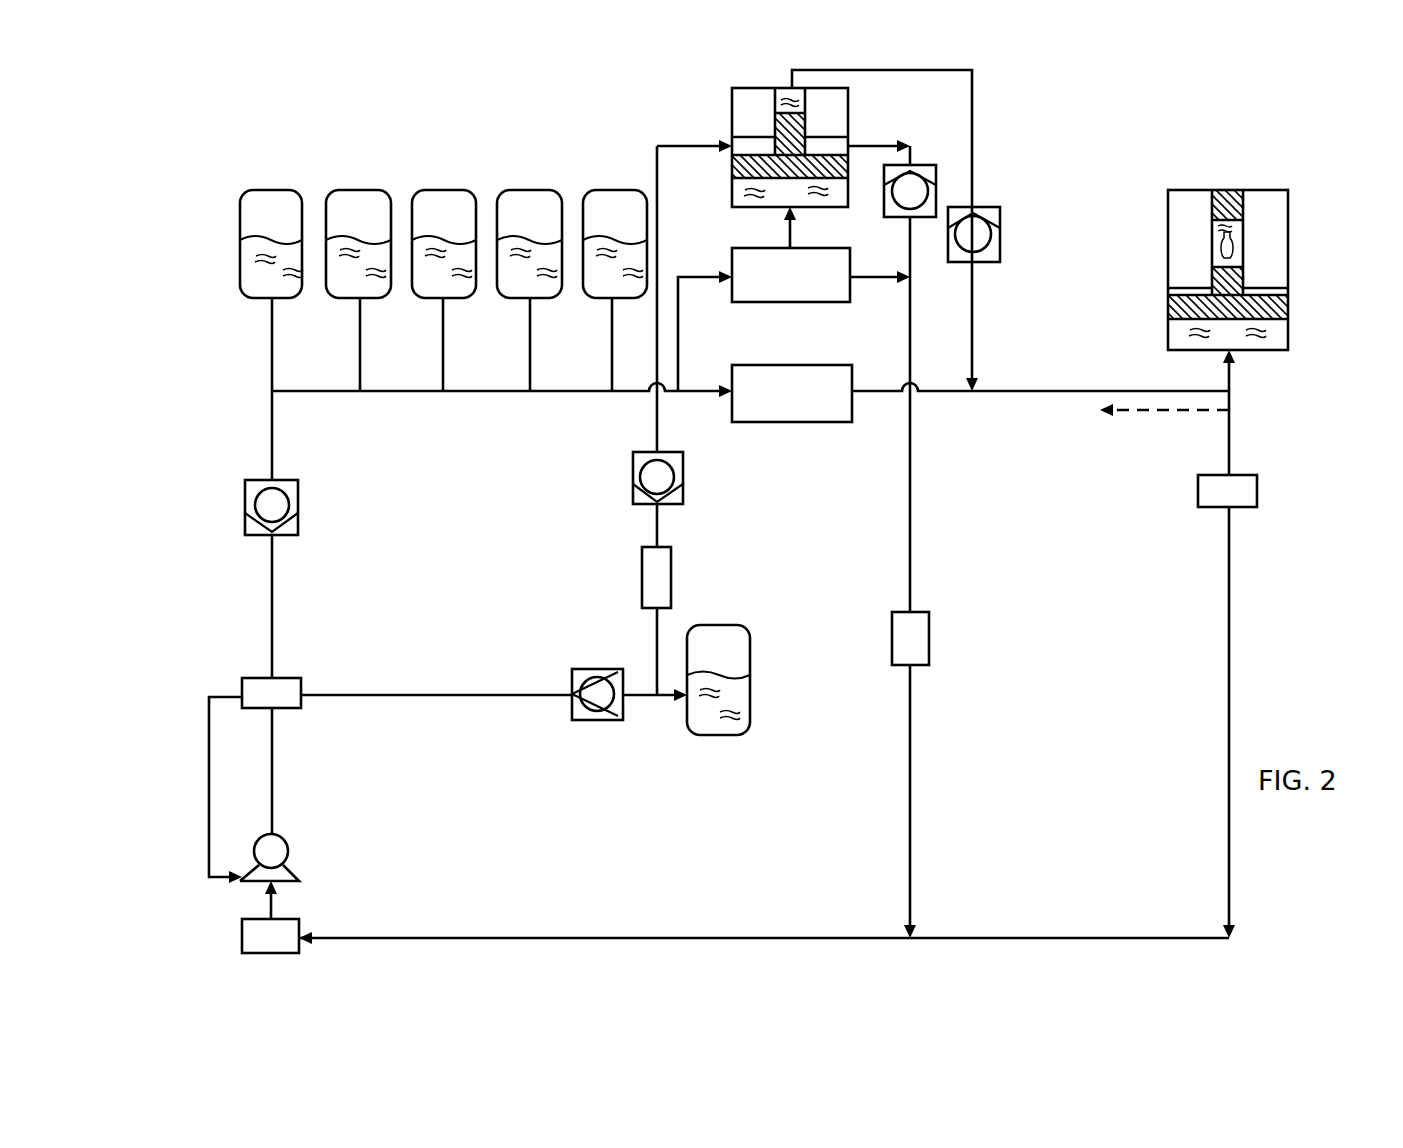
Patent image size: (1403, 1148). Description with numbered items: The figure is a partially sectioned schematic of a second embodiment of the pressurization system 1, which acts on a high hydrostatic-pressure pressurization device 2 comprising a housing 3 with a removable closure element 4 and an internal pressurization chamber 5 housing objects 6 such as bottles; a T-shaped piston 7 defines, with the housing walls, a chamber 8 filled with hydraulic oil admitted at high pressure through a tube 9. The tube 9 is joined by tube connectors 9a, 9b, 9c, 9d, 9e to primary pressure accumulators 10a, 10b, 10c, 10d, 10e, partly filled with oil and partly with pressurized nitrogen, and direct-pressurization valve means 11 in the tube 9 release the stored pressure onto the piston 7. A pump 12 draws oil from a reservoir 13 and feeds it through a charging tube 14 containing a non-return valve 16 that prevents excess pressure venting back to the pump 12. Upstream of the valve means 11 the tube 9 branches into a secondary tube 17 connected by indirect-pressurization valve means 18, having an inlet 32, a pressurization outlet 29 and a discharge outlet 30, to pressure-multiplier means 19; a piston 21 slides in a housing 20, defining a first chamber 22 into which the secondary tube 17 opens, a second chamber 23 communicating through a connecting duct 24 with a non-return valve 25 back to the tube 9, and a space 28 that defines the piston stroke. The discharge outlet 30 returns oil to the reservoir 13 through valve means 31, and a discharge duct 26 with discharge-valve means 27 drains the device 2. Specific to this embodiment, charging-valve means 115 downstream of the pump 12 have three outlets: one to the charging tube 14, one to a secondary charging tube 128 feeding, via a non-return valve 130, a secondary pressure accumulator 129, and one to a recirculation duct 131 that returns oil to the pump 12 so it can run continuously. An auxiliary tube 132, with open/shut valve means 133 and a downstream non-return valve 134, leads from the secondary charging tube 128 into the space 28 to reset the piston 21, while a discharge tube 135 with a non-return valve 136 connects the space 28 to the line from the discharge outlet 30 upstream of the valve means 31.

The pressurization system 1 is at (398, 106).
The pressurization device 2 is at (1300, 217).
The housing 3 is at (1288, 196).
The removable closure element 4 is at (1223, 190).
The pressurization chamber 5 is at (1210, 243).
The objects 6 is at (1243, 250).
The piston 7 is at (1288, 305).
The chamber 8 is at (1180, 340).
The tube 9 is at (1025, 391).
The tube connector 9a is at (272, 345).
The tube connector 9b is at (360, 345).
The tube connector 9c is at (443, 345).
The tube connector 9d is at (530, 345).
The tube connector 9e is at (612, 345).
The primary pressure accumulator 10a is at (258, 190).
The primary pressure accumulator 10b is at (340, 190).
The primary pressure accumulator 10c is at (424, 190).
The primary pressure accumulator 10d is at (509, 190).
The primary pressure accumulator 10e is at (596, 190).
The direct-pressurization valve means 11 is at (773, 422).
The pump 12 is at (297, 862).
The reservoir 13 is at (299, 931).
The charging tube 14 is at (272, 626).
The non-return valve 16 is at (298, 514).
The secondary tube 17 is at (706, 280).
The indirect-pressurization valve means 18 is at (850, 288).
The pressure-multiplier means 19 is at (722, 105).
The housing 20 is at (848, 108).
The piston 21 is at (848, 150).
The first chamber 22 is at (848, 188).
The second chamber 23 is at (788, 93).
The connecting duct 24 is at (972, 70).
The non-return valve 25 is at (1000, 222).
The discharge duct 26 is at (1232, 450).
The discharge-valve means 27 is at (1198, 490).
The space 28 is at (736, 147).
The pressurization outlet 29 is at (790, 237).
The discharge outlet 30 is at (880, 273).
The valve means 31 is at (930, 635).
The inlet 32 is at (728, 283).
The charging-valve means 115 is at (301, 693).
The secondary charging tube 128 is at (517, 697).
The secondary pressure accumulator 129 is at (750, 653).
The non-return valve 130 is at (605, 722).
The recirculation duct 131 is at (209, 800).
The auxiliary tube 132 is at (657, 638).
The valve means 133 is at (672, 577).
The non-return valve 134 is at (633, 483).
The discharge tube 135 is at (912, 168).
The non-return valve 136 is at (936, 182).